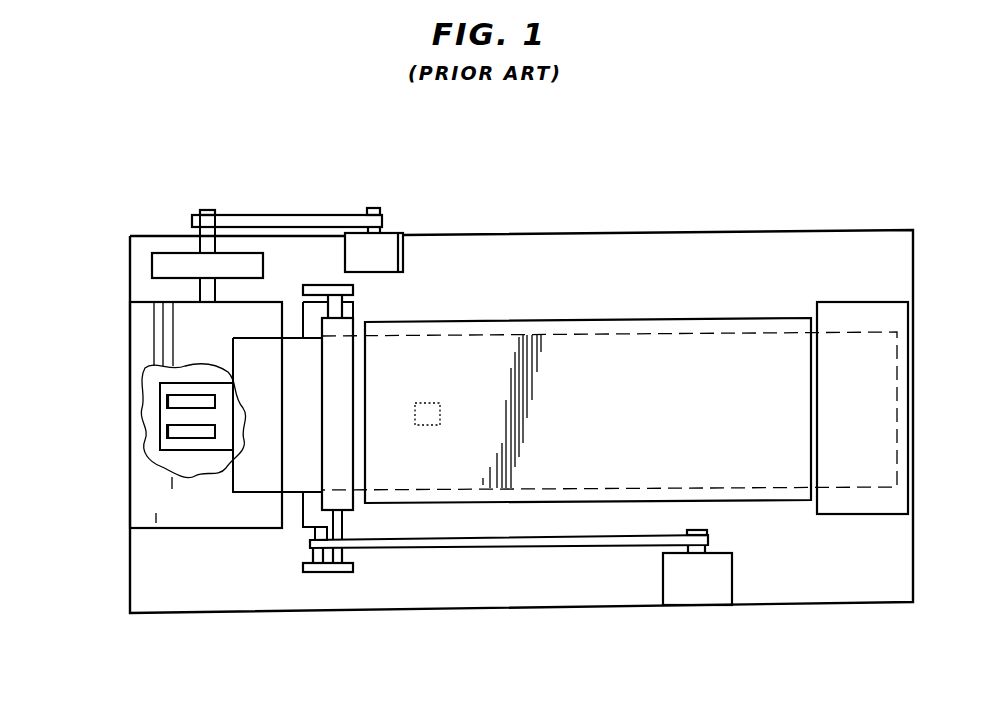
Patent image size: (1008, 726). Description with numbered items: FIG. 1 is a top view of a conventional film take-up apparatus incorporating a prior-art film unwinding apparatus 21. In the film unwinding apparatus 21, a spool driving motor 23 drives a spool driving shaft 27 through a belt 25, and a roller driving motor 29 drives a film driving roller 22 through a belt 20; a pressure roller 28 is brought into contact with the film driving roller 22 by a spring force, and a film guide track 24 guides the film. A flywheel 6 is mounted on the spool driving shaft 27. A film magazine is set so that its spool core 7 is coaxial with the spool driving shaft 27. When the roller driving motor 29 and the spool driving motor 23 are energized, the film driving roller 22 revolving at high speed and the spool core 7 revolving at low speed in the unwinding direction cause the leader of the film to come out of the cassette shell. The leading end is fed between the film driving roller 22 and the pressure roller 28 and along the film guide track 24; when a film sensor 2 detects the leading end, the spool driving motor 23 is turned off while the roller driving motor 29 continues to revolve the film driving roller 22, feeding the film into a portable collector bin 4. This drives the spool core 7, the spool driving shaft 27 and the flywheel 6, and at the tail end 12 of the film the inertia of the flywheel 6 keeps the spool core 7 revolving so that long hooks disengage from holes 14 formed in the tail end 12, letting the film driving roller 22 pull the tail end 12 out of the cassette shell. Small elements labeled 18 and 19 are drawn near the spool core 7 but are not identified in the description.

The film sensor 2 is at (428, 400).
The portable collector bin 4 is at (851, 310).
The flywheel 6 is at (163, 259).
The spool core 7 is at (208, 373).
The tail end of the film 12 is at (147, 443).
The holes 14 is at (193, 438).
The electrodes 18 is at (215, 430).
The lead wires 19 is at (168, 430).
The belt 20 is at (518, 547).
The film unwinding apparatus 21 is at (112, 427).
The film driving roller 22 is at (308, 520).
The spool driving motor 23 is at (393, 240).
The film guide track 24 is at (697, 318).
The belt 25 is at (280, 212).
The spool driving shaft 27 is at (207, 240).
The pressure roller 28 is at (347, 323).
The roller driving motor 29 is at (705, 592).